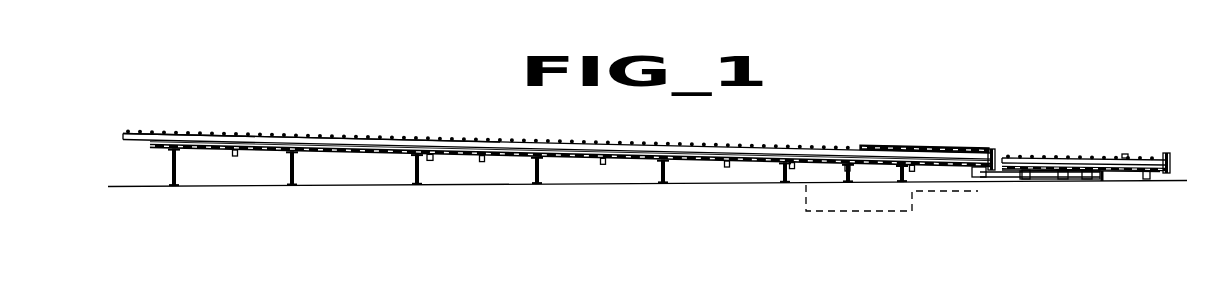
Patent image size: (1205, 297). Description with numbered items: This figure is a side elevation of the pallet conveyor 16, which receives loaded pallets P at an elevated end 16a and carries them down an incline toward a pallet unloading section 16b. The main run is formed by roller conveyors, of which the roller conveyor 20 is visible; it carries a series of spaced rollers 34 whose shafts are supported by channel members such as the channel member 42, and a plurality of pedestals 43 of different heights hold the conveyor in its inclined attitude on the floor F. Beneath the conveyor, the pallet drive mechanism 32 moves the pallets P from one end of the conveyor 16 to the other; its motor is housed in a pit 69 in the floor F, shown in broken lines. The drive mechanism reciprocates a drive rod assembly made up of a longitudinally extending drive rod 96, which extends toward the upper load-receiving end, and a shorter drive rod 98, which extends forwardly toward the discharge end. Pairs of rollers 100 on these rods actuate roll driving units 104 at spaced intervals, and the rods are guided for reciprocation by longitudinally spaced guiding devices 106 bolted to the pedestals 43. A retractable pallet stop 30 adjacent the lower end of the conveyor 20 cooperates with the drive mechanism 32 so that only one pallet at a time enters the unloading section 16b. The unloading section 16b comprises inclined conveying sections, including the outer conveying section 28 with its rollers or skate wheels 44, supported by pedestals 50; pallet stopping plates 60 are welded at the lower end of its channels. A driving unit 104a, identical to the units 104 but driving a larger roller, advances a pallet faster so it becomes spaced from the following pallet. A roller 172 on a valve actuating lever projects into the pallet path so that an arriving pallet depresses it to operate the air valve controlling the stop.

The pallet conveyor 16 is at (795, 134).
The elevated end 16a is at (197, 135).
The pallet unloading section 16b is at (1087, 157).
The roller conveyor 20 is at (327, 139).
The rollers 34 is at (257, 134).
The channel member 42 is at (148, 143).
The guiding device 106 is at (176, 154).
The rollers 100 is at (235, 156).
The pedestals 43 is at (415, 168).
The drive rod 96 is at (431, 161).
The roll driving unit 104 is at (727, 167).
The driving unit 104a is at (1070, 180).
The pallet drive mechanism 32 is at (748, 168).
The pit 69 is at (808, 204).
The pallets P is at (860, 145).
The floor F is at (498, 182).
The retractable pallet stop 30 is at (979, 151).
The drive rod 98 is at (981, 178).
The rollers or skate wheels 44 is at (1028, 157).
The conveying section 28 is at (1037, 157).
The roller 172 is at (1130, 146).
The pallet stopping plates 60 is at (1180, 138).
The pedestals 50 is at (1026, 180).